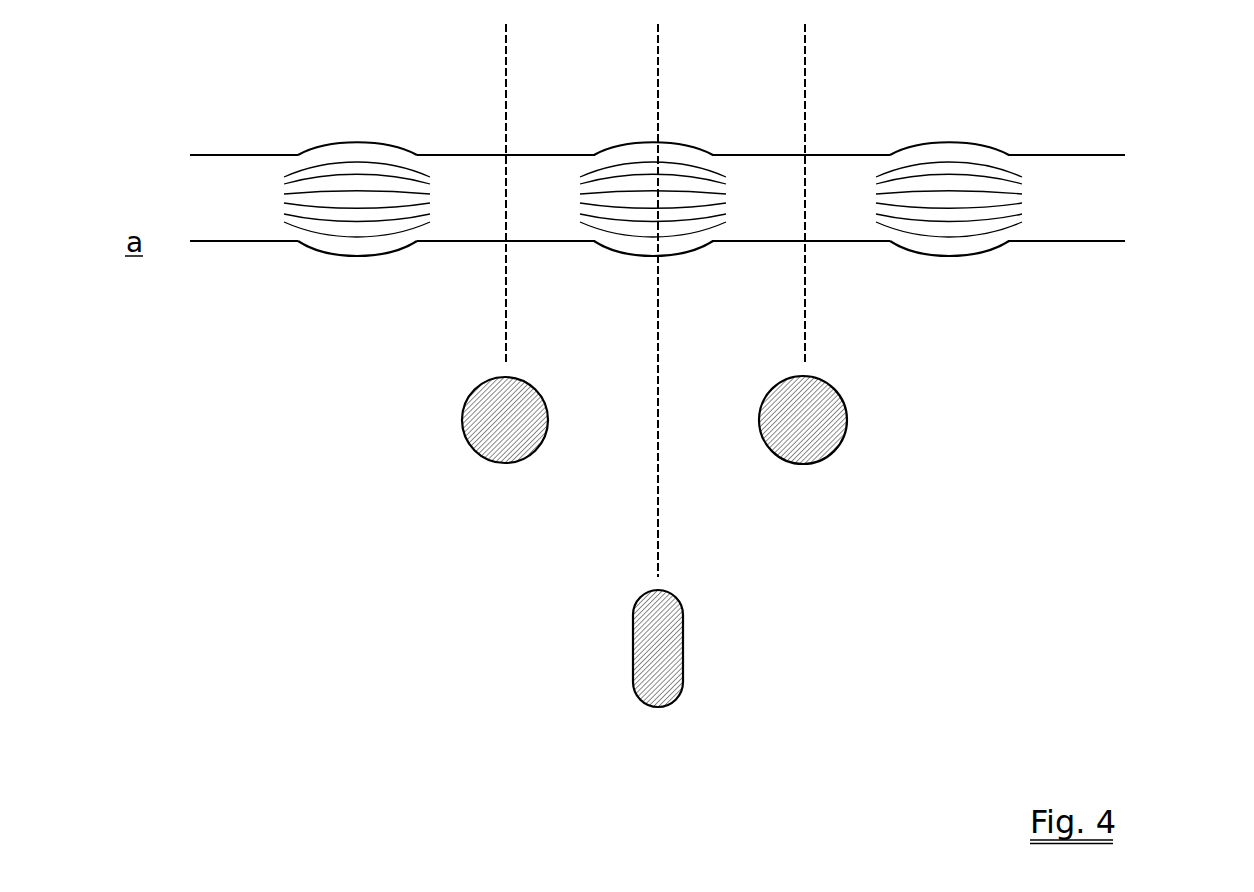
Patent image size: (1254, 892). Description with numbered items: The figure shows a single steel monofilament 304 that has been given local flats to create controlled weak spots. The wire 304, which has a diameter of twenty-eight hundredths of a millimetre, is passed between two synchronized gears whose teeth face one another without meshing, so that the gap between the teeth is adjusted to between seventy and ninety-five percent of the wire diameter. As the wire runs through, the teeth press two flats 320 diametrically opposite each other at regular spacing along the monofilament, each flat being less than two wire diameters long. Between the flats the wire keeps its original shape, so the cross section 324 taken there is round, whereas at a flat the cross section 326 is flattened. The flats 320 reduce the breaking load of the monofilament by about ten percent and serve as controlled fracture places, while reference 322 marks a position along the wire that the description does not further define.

The monofilament 304 is at (1105, 177).
The flats 320 is at (657, 148).
The centerline 322 is at (805, 178).
The round cross section 324 is at (818, 443).
The flattened cross section 326 is at (663, 672).